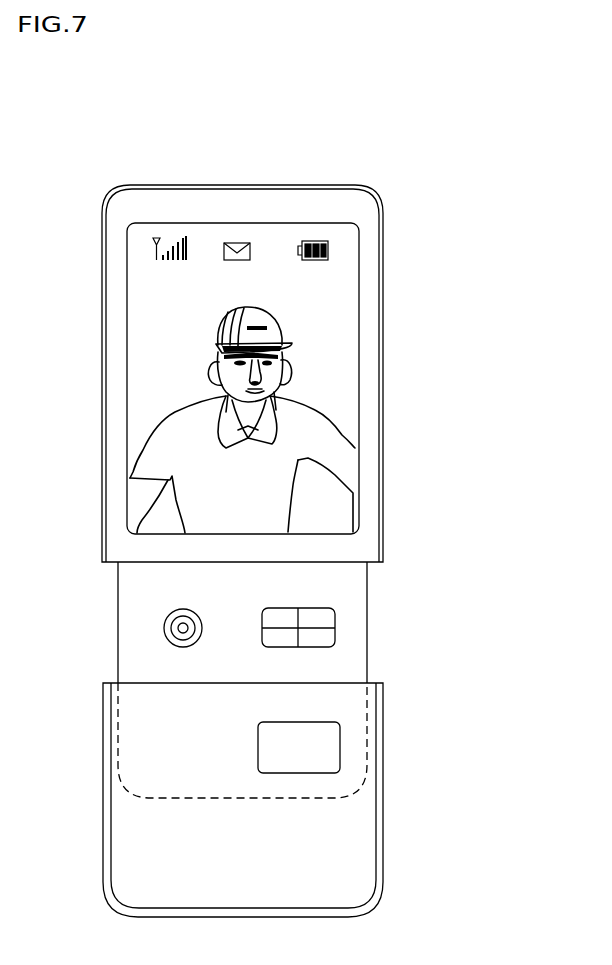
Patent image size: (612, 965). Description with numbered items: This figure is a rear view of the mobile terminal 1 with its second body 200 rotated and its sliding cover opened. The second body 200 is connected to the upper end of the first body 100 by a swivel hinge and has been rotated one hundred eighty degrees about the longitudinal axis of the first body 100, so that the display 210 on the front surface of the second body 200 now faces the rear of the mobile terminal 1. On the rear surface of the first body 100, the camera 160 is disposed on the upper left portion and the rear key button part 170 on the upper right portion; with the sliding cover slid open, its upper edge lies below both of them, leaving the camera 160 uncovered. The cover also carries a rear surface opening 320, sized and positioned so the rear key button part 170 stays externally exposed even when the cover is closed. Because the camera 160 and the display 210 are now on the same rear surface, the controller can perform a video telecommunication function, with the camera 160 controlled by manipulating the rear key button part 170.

The mobile terminal 1 is at (323, 152).
The first body 100 is at (368, 582).
The camera 160 is at (164, 628).
The rear key button part 170 is at (314, 618).
The second body 200 is at (384, 296).
The display 210 is at (345, 357).
The rear surface opening 320 is at (340, 745).